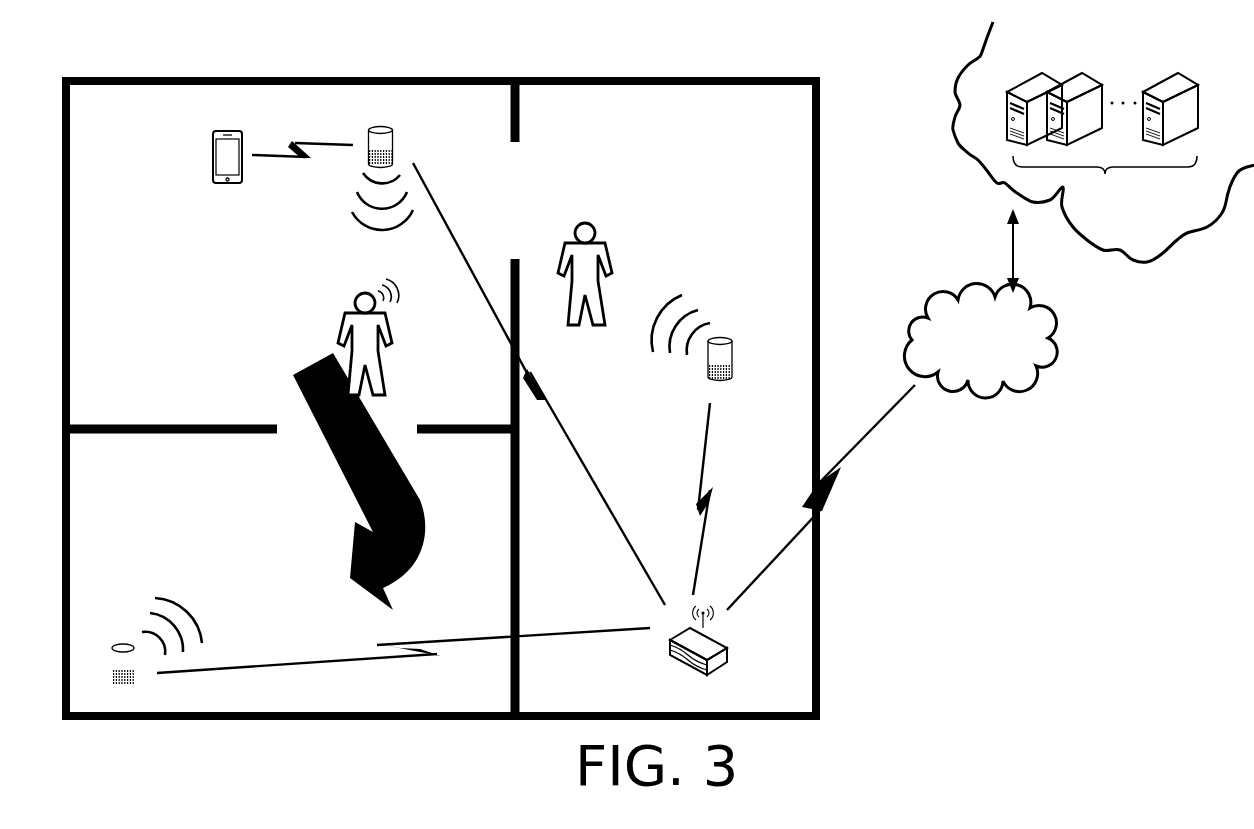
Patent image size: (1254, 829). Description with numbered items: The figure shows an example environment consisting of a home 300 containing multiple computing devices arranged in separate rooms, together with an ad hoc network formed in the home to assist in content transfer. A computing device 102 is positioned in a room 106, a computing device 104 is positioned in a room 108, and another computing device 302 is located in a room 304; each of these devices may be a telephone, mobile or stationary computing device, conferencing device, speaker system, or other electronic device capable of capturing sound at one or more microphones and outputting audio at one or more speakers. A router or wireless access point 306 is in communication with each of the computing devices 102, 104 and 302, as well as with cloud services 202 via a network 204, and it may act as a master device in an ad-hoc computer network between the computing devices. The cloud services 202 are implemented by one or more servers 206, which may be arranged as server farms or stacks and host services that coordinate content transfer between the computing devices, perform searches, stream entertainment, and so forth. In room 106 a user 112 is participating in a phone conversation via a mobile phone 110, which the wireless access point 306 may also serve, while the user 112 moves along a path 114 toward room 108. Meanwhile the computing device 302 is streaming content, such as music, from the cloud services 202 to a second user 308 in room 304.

The home 300 is at (152, 52).
The computing device 102 is at (369, 127).
The computing device 104 is at (120, 686).
The room 106 is at (257, 111).
The room 108 is at (265, 469).
The mobile phone 110 is at (227, 198).
The user 112 is at (401, 348).
The path 114 is at (320, 480).
The cloud services 202 is at (1152, 350).
The network 204 is at (996, 360).
The servers 206 is at (1121, 203).
The computing device 302 is at (732, 350).
The room 304 is at (580, 111).
The wireless access point 306 is at (727, 650).
The user 308 is at (621, 242).